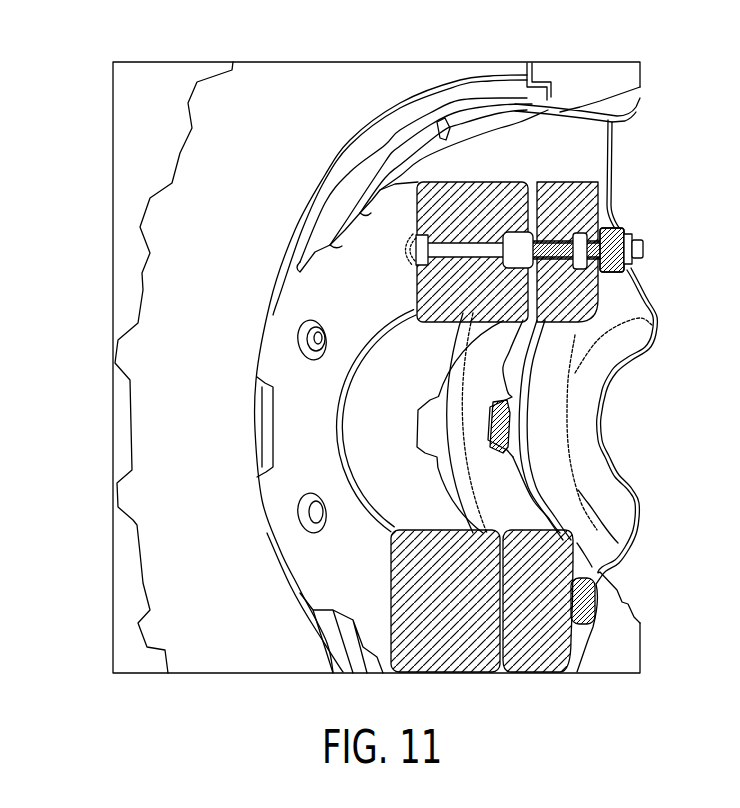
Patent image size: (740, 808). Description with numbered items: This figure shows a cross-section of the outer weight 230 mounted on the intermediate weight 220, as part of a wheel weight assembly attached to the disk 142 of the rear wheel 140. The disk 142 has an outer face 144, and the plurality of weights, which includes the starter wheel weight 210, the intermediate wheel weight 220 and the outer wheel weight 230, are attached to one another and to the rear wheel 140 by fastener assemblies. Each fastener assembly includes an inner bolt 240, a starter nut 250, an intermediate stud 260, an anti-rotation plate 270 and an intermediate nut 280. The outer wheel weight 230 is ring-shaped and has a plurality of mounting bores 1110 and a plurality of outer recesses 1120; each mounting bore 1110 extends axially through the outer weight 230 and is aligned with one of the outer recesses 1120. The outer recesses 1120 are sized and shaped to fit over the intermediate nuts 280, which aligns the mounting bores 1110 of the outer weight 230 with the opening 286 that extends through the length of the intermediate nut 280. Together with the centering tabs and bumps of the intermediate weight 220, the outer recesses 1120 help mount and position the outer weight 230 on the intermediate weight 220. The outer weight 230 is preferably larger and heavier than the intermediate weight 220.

The rear wheel 140 is at (181, 187).
The mounting bores 1110 is at (460, 253).
The outer wheel weight 230 is at (335, 450).
The outer recesses 1120 is at (470, 318).
The outer face 144 is at (582, 479).
The disk 142 is at (603, 448).
The intermediate stud 260 is at (600, 265).
The anti-rotation plate 270 is at (540, 245).
The opening 286 is at (425, 282).
The intermediate nut 280 is at (530, 258).
The starter nut 250 is at (620, 240).
The inner bolt 240 is at (630, 252).
The intermediate wheel weight 220 is at (543, 652).
The starter wheel weight 210 is at (592, 595).